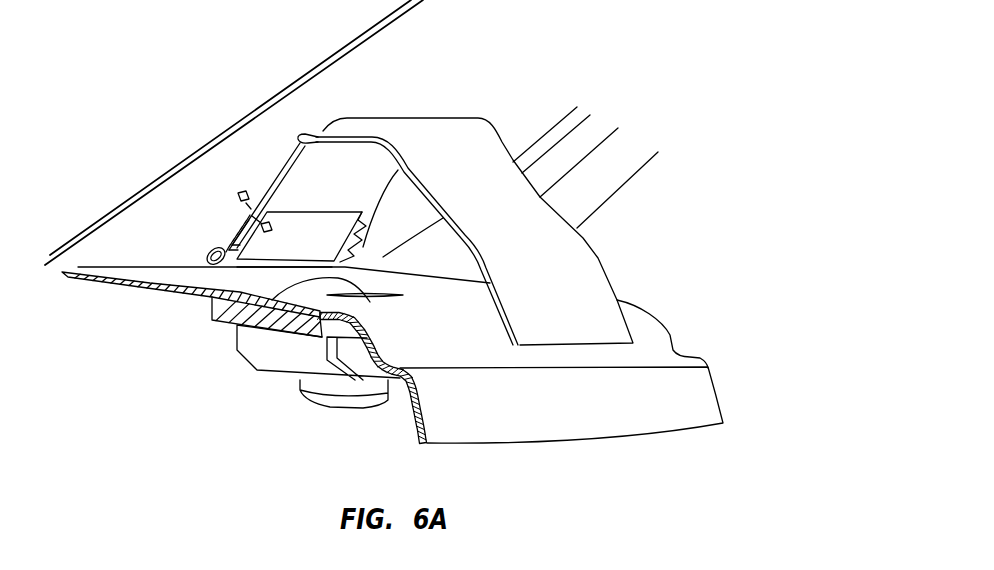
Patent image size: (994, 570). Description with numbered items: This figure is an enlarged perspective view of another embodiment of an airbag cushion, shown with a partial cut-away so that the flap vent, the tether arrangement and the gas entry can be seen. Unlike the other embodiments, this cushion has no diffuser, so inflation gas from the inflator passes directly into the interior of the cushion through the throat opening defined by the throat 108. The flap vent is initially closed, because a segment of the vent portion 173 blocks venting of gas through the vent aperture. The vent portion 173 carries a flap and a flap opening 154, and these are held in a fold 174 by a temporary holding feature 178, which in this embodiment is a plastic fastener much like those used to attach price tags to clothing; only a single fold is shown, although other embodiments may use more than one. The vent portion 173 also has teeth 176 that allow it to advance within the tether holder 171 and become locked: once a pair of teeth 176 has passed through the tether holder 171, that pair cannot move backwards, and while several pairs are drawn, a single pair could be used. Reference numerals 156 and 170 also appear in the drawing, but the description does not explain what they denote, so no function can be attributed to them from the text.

The throat 108 is at (240, 323).
The flap opening 154 is at (222, 247).
The spring coil 156 is at (226, 238).
The deflector panel 170 is at (430, 148).
The tether holder 171 is at (300, 133).
The vent portion 173 is at (290, 181).
The fold 174 is at (207, 258).
The teeth 176 is at (236, 199).
The temporary holding feature 178 is at (241, 189).